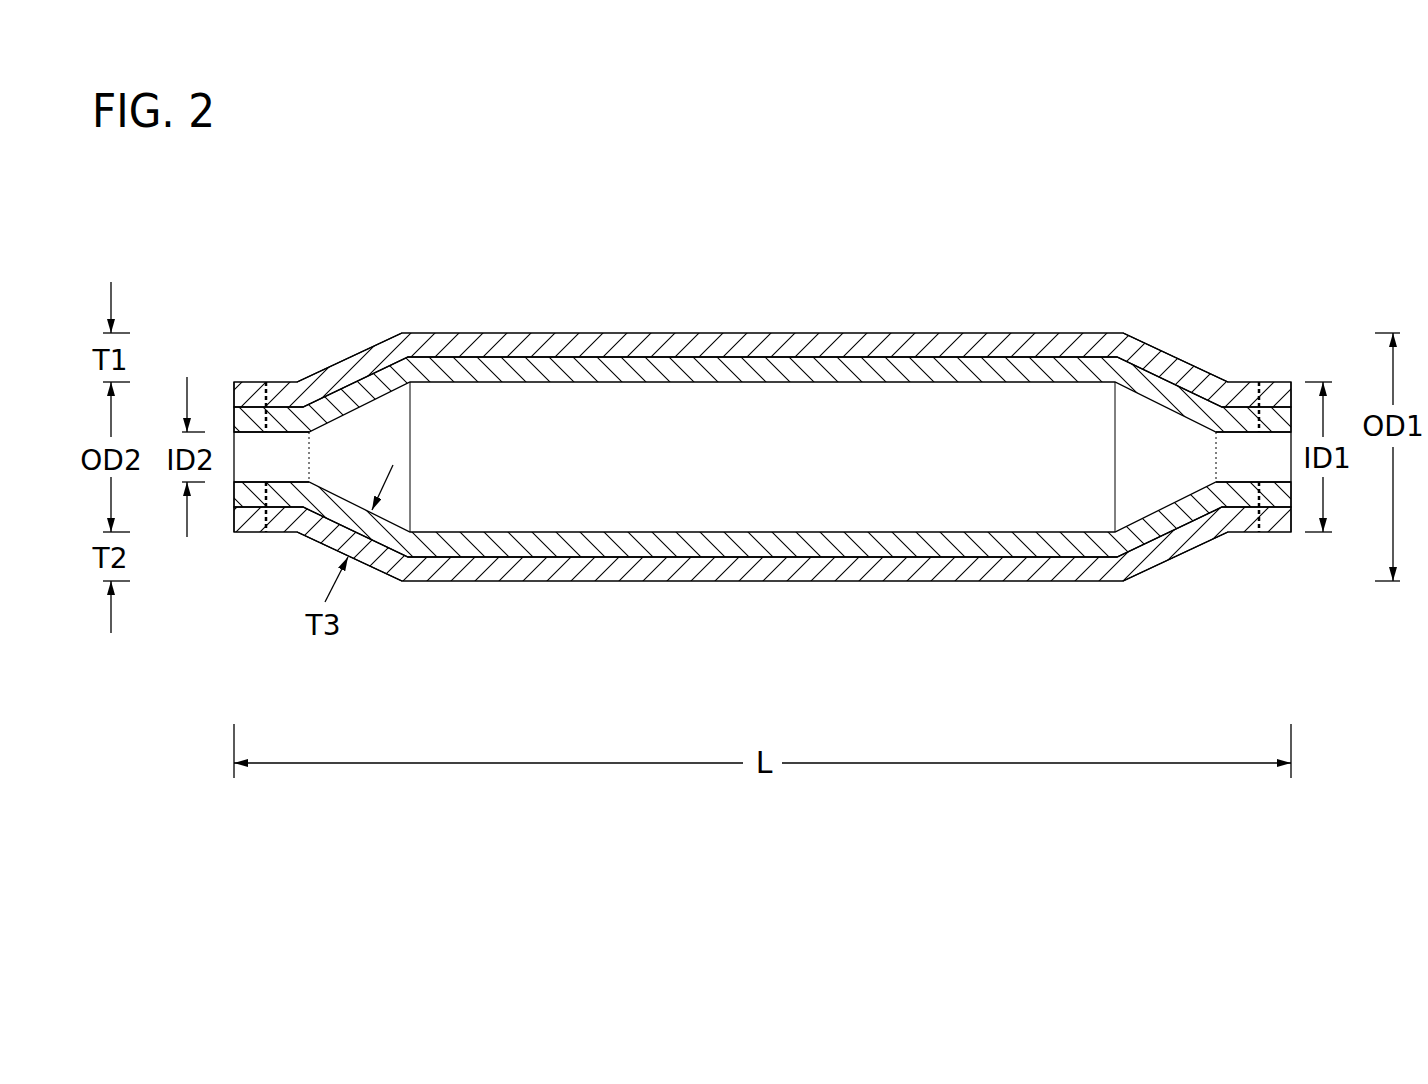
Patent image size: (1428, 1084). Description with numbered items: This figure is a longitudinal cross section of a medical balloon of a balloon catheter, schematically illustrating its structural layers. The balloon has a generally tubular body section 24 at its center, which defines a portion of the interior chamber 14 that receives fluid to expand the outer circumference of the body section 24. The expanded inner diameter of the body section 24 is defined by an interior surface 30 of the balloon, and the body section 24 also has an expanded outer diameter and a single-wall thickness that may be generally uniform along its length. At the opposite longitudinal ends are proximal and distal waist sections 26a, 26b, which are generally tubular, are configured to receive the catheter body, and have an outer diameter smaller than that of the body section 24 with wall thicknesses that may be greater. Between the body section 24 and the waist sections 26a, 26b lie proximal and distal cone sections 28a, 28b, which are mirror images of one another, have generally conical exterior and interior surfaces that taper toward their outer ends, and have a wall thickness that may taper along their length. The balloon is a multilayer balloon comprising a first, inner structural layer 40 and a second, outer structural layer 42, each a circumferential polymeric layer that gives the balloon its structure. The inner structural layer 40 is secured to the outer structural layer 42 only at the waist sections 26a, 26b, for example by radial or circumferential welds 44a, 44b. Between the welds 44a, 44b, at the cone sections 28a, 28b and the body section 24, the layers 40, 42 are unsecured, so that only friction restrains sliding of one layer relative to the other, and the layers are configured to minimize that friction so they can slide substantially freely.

The interior chamber 14 is at (707, 472).
The balloon body section 24 is at (890, 333).
The proximal waist section 26a is at (1273, 532).
The distal waist section 26b is at (278, 382).
The proximal cone section 28a is at (1172, 355).
The distal cone section 28b is at (368, 568).
The interior surface 30 is at (592, 382).
The inner structural layer 40 is at (873, 543).
The outer structural layer 42 is at (710, 572).
The proximal weld 44a is at (1262, 382).
The distal weld 44b is at (270, 532).